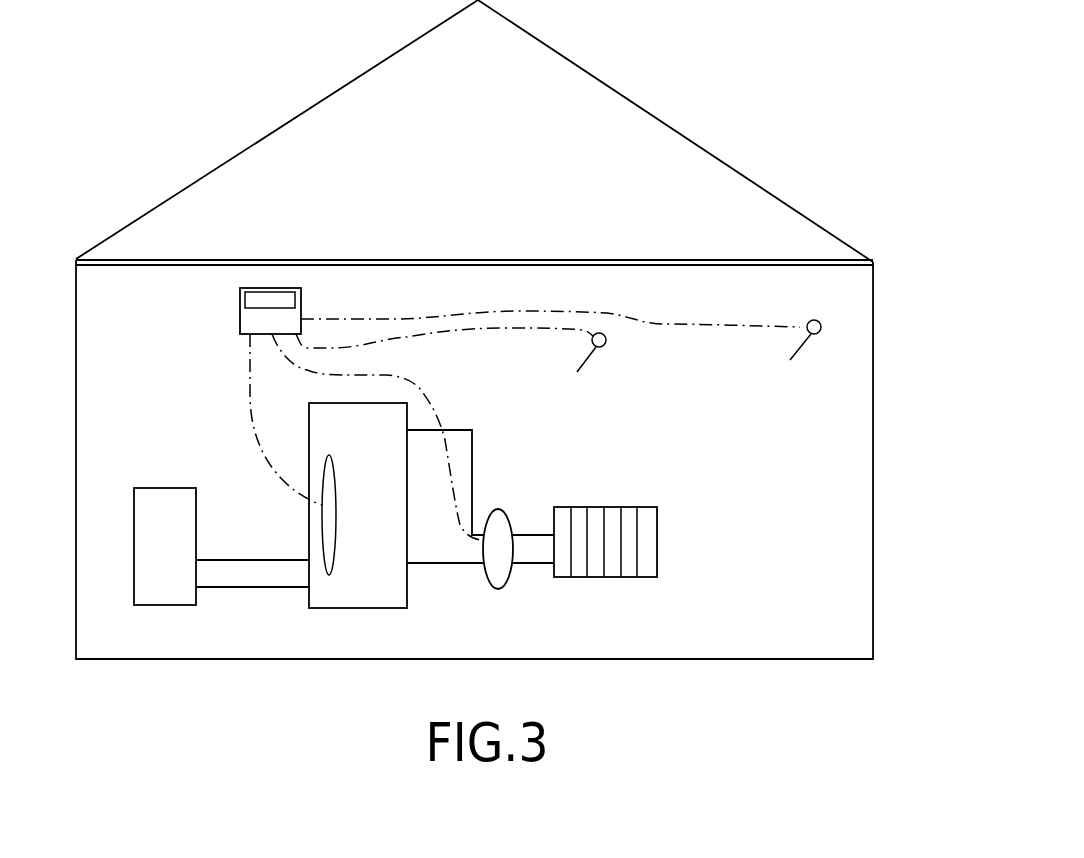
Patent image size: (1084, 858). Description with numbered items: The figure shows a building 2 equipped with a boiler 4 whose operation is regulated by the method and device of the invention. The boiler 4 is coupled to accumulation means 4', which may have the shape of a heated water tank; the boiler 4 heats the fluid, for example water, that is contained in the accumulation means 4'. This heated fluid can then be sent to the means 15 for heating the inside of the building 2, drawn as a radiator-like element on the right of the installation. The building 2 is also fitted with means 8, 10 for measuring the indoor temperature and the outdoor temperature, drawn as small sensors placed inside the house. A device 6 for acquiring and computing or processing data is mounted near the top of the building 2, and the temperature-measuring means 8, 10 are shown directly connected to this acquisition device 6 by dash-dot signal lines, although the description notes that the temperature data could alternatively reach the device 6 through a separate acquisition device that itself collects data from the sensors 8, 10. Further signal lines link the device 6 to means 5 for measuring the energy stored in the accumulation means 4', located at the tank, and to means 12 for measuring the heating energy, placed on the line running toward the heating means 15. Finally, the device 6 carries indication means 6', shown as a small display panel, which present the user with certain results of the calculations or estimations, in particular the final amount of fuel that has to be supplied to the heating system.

The building 2 is at (613, 92).
The boiler 4 is at (165, 507).
The accumulation means 4' is at (381, 490).
The means for measuring the energy stored in the accumulation means 5 is at (327, 520).
The device for acquiring and computing or processing data 6 is at (312, 308).
The indication means 6' is at (218, 288).
The means for measuring the indoor temperature 8 is at (590, 355).
The means for measuring the outdoor temperature 10 is at (803, 348).
The means for measuring the heating energy 12 is at (497, 512).
The means for heating the inside of the building 15 is at (613, 577).